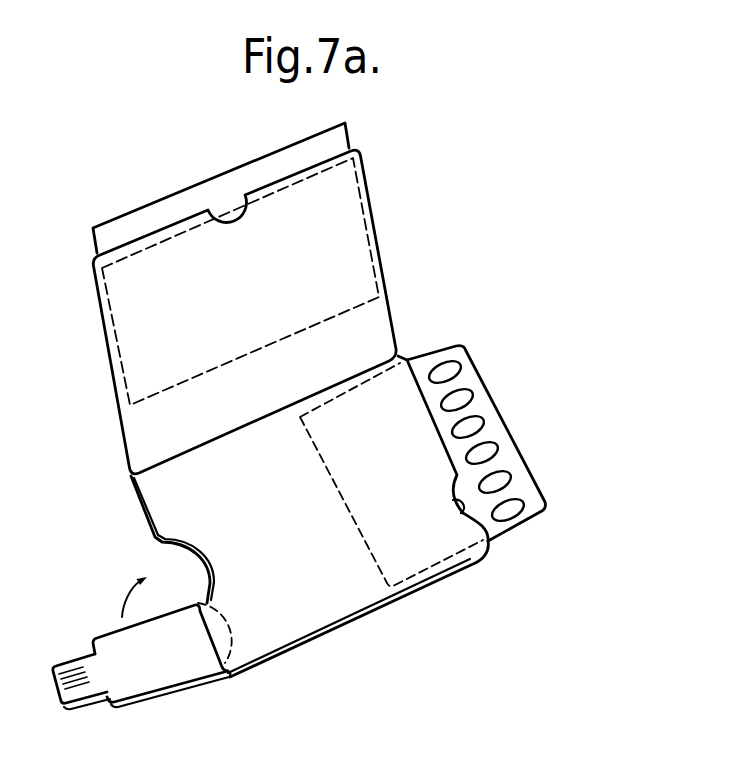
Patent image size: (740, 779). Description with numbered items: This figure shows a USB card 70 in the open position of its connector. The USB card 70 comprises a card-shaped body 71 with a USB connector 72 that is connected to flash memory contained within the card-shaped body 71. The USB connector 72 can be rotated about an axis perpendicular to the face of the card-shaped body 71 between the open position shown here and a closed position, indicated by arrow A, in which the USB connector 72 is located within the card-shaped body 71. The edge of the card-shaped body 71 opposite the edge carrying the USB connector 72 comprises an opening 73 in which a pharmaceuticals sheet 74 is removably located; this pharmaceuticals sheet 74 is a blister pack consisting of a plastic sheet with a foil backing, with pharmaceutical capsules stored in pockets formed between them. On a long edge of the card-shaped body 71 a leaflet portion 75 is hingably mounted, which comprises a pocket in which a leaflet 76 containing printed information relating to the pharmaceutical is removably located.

The USB card 70 is at (445, 150).
The card-shaped body 71 is at (193, 507).
The USB connector 72 is at (147, 667).
The opening 73 is at (414, 350).
The pharmaceuticals sheet 74 is at (485, 405).
The leaflet portion 75 is at (378, 317).
The leaflet 76 is at (118, 237).